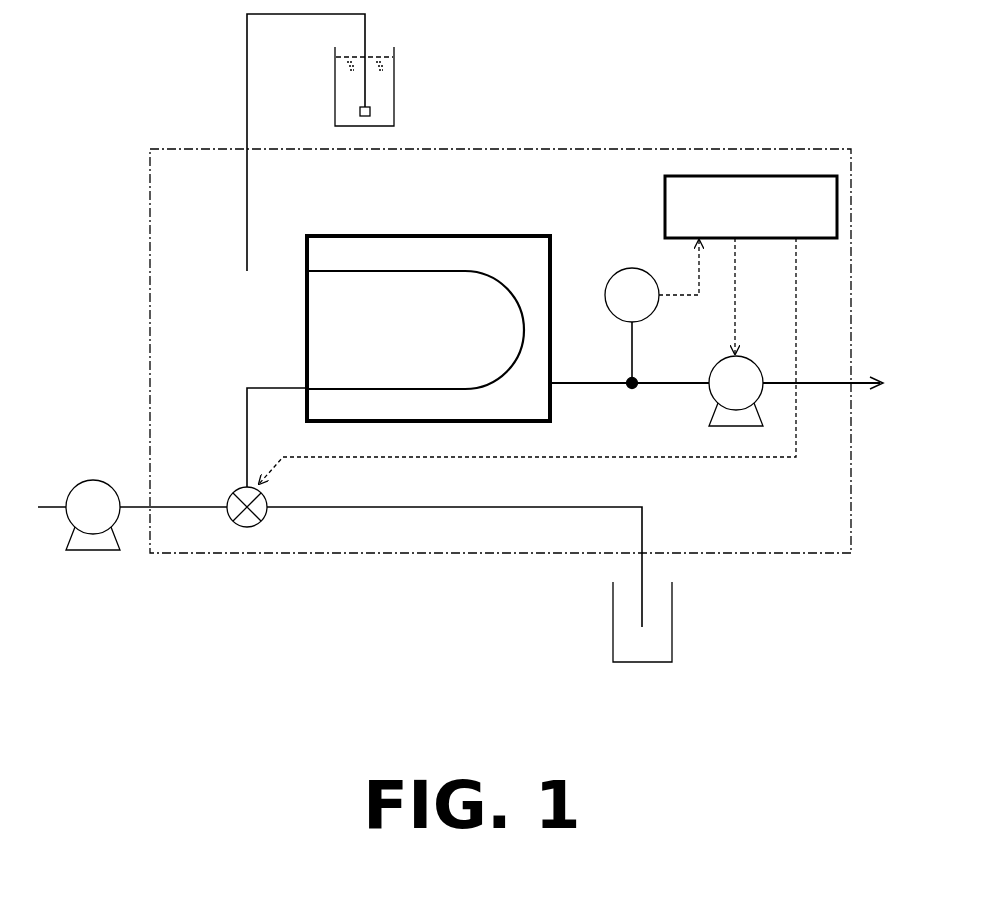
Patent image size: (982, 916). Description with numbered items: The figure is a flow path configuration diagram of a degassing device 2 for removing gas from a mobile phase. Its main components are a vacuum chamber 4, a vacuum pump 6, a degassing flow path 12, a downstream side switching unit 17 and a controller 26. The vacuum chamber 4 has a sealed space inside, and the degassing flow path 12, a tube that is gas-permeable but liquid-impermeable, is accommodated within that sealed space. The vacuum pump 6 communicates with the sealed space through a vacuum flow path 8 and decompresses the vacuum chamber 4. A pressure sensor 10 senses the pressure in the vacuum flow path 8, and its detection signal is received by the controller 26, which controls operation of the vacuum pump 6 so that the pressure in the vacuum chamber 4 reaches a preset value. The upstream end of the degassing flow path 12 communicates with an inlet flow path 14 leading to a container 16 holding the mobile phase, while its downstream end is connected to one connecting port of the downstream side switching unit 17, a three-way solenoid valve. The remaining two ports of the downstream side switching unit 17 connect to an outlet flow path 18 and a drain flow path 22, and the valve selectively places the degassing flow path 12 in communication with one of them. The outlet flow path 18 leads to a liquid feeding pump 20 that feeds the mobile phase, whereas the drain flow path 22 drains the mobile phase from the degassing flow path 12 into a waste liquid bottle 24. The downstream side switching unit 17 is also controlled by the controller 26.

The degassing device 2 is at (816, 149).
The vacuum chamber 4 is at (497, 234).
The vacuum pump 6 is at (750, 360).
The vacuum flow path 8 is at (586, 388).
The pressure sensor 10 is at (621, 268).
The degassing flow path 12 is at (377, 387).
The inlet flow path 14 is at (246, 115).
The container 16 is at (395, 87).
The downstream side switching unit 17 is at (238, 490).
The outlet flow path 18 is at (197, 505).
The liquid feeding pump 20 is at (87, 481).
The drain flow path 22 is at (645, 528).
The waste liquid bottle 24 is at (674, 622).
The controller 26 is at (665, 200).